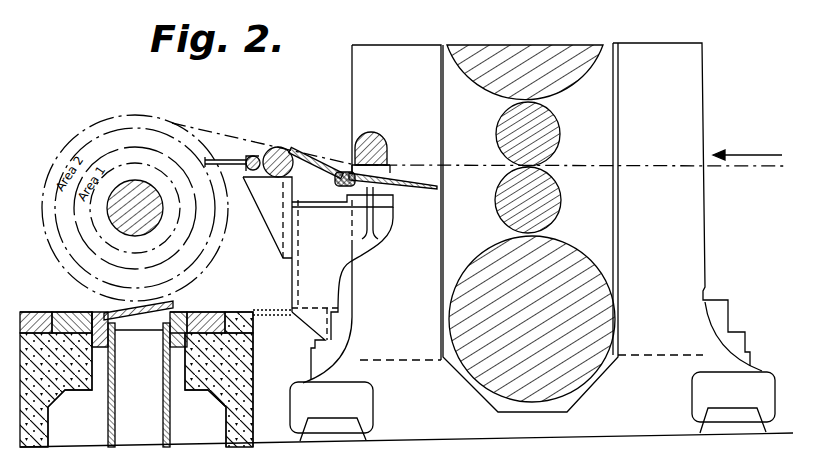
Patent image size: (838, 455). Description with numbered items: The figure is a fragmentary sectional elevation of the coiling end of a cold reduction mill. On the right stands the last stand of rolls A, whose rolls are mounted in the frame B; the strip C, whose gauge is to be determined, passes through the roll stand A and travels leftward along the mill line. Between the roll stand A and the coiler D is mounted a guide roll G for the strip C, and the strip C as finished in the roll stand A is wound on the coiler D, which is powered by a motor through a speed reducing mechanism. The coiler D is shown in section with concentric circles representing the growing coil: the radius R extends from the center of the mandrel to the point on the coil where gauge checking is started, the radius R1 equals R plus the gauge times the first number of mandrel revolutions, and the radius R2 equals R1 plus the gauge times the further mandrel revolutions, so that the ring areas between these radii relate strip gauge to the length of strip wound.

The coiler D is at (118, 178).
The guide roll G is at (284, 150).
The frame B is at (563, 238).
The last stand of rolls A is at (530, 227).
The strip C is at (752, 168).
The radius from the center of the mandrel to the starting point on the coil R is at (135, 208).
The radius of the first ring boundary R1 is at (135, 208).
The radius of the second ring boundary R2 is at (135, 208).